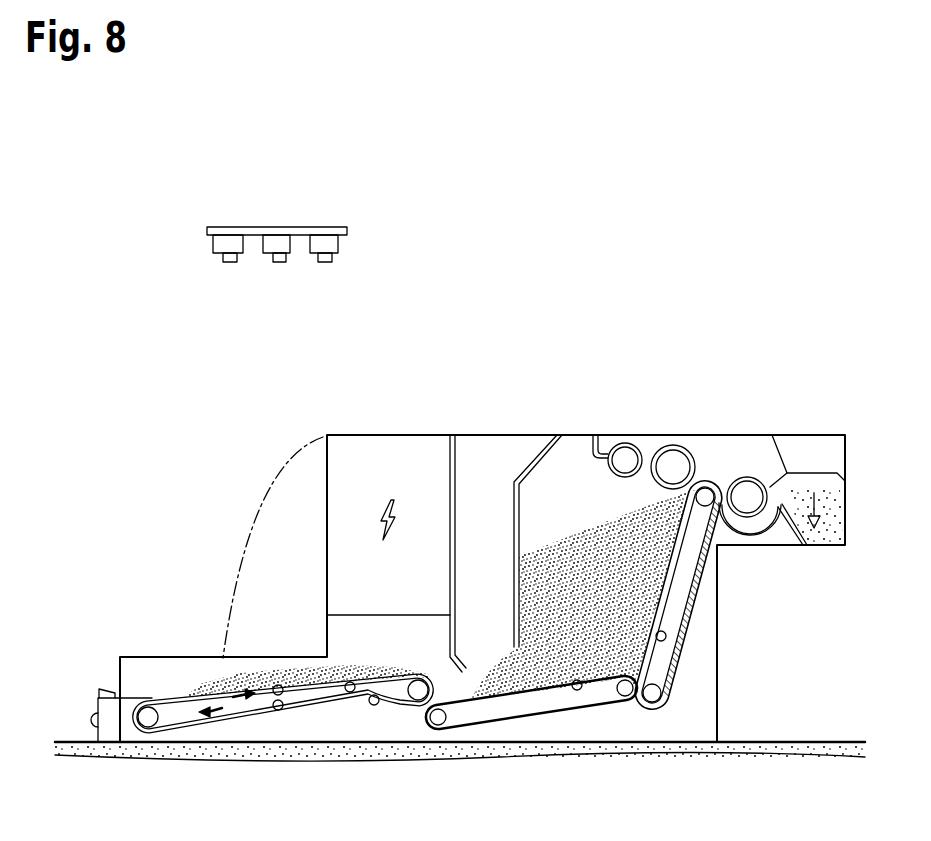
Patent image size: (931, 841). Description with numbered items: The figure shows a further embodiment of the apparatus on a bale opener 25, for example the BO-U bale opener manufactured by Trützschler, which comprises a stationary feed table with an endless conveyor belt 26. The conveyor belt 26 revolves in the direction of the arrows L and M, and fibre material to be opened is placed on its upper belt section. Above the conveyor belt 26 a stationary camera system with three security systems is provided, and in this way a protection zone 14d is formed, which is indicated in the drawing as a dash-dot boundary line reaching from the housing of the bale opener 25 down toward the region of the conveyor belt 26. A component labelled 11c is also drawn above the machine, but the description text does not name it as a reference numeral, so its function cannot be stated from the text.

The nozzle bar 11c is at (347, 207).
The bale opener 25 is at (412, 400).
The protection zone 14d is at (263, 577).
The arrow indicating direction of revolution of the conveyor belt L is at (198, 705).
The arrow indicating direction of revolution of the conveyor belt M is at (232, 709).
The conveyor belt 26 is at (307, 698).